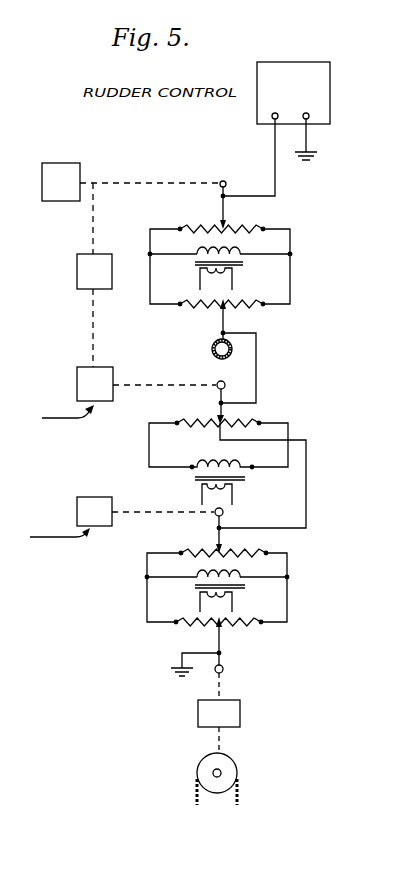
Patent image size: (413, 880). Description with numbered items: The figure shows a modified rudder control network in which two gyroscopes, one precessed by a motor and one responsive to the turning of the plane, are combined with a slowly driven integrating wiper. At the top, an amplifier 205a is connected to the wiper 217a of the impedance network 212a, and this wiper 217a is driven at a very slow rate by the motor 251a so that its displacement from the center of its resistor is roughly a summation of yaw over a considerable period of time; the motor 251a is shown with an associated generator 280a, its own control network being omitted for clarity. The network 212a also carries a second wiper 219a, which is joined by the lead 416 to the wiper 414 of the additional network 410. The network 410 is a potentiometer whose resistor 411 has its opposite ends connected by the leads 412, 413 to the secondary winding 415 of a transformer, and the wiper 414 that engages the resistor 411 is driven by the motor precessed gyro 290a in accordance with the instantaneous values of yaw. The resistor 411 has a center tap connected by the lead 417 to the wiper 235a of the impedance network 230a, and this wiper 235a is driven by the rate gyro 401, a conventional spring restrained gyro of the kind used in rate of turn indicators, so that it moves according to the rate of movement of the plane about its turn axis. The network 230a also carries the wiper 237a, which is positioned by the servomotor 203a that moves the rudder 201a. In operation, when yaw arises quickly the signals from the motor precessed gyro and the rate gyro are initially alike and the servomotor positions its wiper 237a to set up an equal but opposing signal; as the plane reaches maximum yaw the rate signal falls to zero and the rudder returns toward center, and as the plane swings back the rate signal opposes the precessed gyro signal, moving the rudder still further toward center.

The amplifier 205a is at (315, 104).
The motor 251a is at (60, 198).
The wiper 217a is at (220, 206).
The impedance network 212a is at (272, 286).
The generator 280a is at (77, 275).
The wiper 219a is at (225, 321).
The lead 416 is at (257, 370).
The motor precessed gyro 290a is at (78, 381).
The wiper 414 is at (216, 405).
The resistor 411 is at (244, 422).
The lead 413 is at (289, 430).
The lead 412 is at (151, 437).
The secondary winding 415 is at (218, 462).
The network 410 is at (275, 462).
The lead 417 is at (306, 481).
The rate gyro 401 is at (100, 506).
The wiper 235a is at (216, 529).
The impedance network 230a is at (272, 608).
The wiper 237a is at (222, 645).
The servomotor 203a is at (232, 708).
The rudder 201a is at (228, 768).